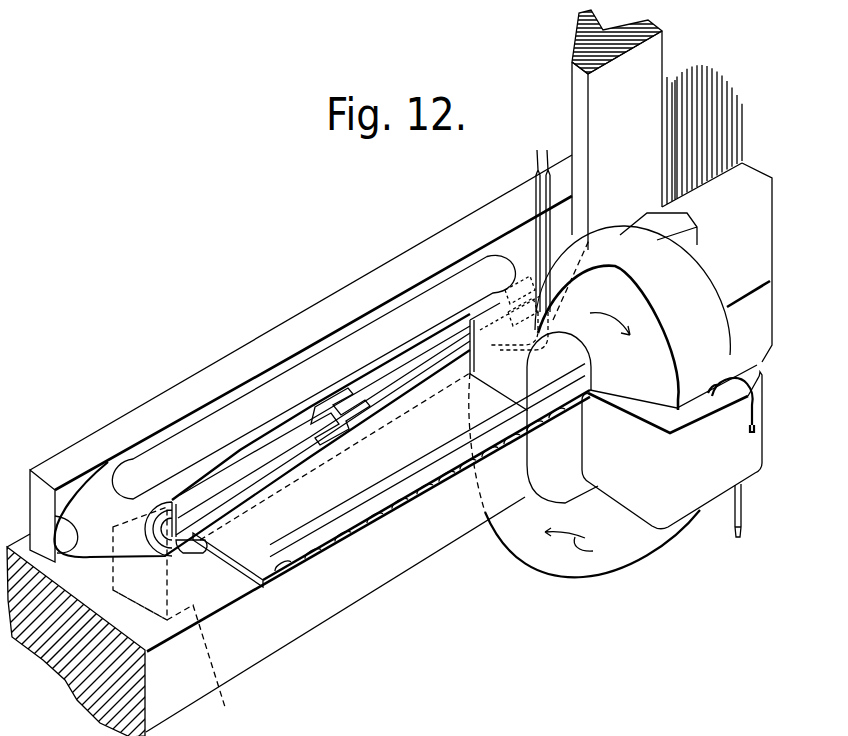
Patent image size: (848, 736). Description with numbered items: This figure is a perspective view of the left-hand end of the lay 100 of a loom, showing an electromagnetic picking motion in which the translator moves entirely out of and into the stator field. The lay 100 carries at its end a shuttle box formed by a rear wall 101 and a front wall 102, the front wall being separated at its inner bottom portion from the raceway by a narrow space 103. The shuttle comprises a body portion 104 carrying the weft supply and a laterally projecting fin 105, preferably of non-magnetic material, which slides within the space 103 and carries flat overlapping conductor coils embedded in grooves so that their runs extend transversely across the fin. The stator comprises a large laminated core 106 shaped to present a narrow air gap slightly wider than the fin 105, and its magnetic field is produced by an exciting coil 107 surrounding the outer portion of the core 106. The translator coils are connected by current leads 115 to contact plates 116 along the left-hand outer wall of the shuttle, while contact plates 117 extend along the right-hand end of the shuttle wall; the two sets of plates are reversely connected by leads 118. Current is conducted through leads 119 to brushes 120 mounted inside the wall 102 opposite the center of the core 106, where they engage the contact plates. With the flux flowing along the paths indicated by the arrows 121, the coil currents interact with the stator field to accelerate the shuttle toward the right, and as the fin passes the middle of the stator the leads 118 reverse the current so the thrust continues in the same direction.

The lay 100 is at (257, 643).
The rear wall 101 is at (95, 433).
The front wall 102 is at (222, 696).
The narrow space 103 is at (250, 587).
The body portion 104 is at (205, 425).
The fin 105 is at (310, 527).
The core 106 is at (700, 318).
The exciting coil 107 is at (735, 462).
The current leads 115 is at (180, 556).
The contact plates 116 is at (293, 447).
The contact plates 117 is at (410, 390).
The leads 118 is at (352, 418).
The leads 119 is at (523, 235).
The brushes 120 is at (507, 300).
The arrows 121 is at (584, 442).